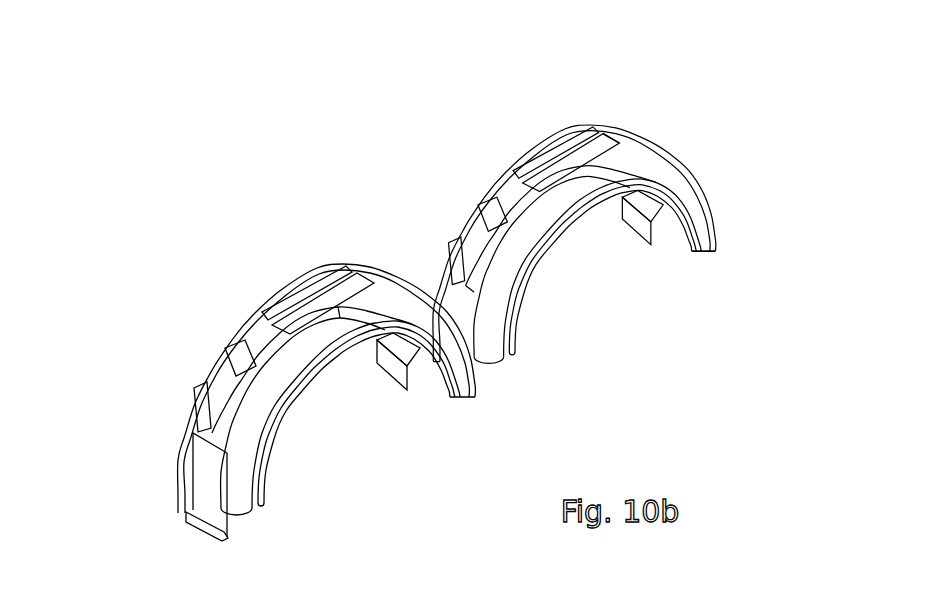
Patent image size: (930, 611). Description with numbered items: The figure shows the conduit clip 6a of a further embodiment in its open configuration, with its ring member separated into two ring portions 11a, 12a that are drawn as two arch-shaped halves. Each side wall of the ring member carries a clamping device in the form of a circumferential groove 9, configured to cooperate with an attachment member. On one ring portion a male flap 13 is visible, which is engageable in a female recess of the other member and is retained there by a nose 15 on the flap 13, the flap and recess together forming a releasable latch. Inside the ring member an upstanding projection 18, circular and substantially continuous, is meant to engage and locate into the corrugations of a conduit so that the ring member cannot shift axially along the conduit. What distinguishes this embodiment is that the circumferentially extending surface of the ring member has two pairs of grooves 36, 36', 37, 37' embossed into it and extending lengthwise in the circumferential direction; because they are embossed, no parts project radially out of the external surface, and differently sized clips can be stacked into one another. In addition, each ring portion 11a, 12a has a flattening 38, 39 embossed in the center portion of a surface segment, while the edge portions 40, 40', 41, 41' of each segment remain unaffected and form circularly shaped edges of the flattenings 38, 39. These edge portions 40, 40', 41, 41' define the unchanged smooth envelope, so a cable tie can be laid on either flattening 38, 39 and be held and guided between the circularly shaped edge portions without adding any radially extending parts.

The conduit clip 6a is at (337, 223).
The ring portion 11a is at (717, 150).
The ring portion 12a is at (291, 512).
The circumferential groove 9 is at (700, 251).
The male flap 13 is at (203, 480).
The nose 15 is at (190, 522).
The upstanding projection 18 is at (400, 370).
The groove 36 is at (179, 321).
The groove 36' is at (153, 390).
The groove 37 is at (475, 155).
The groove 37' is at (438, 224).
The flattening 38 is at (313, 308).
The flattening 39 is at (567, 160).
The edge portion 40 is at (348, 390).
The edge portion 40' is at (250, 254).
The edge portion 41 is at (638, 90).
The edge portion 41' is at (547, 101).